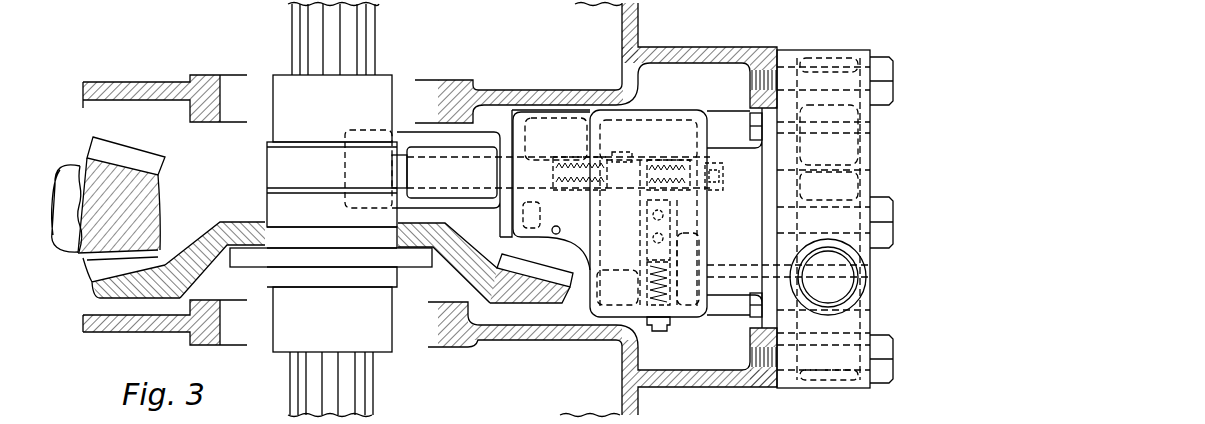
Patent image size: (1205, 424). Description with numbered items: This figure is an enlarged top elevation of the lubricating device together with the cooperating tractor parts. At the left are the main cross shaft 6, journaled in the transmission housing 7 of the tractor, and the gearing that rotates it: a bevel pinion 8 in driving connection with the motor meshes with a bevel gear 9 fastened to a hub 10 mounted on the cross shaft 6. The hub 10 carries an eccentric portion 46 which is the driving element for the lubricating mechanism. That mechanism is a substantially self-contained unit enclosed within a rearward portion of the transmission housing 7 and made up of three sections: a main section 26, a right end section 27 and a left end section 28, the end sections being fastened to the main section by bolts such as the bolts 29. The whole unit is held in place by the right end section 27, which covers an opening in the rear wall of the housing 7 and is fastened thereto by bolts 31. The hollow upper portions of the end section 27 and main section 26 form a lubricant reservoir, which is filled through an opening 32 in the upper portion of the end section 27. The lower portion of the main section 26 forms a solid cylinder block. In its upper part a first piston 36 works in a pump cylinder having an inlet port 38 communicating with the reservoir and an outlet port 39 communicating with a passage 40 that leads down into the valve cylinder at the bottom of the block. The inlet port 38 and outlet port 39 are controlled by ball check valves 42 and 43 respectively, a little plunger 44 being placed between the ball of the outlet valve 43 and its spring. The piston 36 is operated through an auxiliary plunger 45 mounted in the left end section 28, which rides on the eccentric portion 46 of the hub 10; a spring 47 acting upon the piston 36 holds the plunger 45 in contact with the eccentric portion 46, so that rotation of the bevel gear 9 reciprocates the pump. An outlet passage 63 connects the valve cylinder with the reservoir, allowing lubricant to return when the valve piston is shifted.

The main cross shaft 6 is at (290, 378).
The transmission housing 7 is at (526, 89).
The bevel pinion 8 is at (126, 153).
The bevel gear 9 is at (223, 221).
The hub 10 is at (275, 102).
The main section 26 is at (670, 110).
The right end section 27 is at (826, 50).
The left end section 28 is at (478, 208).
The bolts 29 is at (750, 127).
The bolts 31 is at (882, 107).
The opening 32 is at (848, 287).
The first piston 36 is at (630, 152).
The inlet port 38 is at (725, 183).
The outlet port 39 is at (647, 200).
The passage 40 is at (640, 242).
The ball check valve 42 is at (683, 157).
The ball check valve 43 is at (640, 217).
The plunger 44 is at (645, 257).
The auxiliary plunger 45 is at (407, 158).
The eccentric portion 46 is at (266, 164).
The spring 47 is at (577, 151).
The outlet passage 63 is at (558, 228).